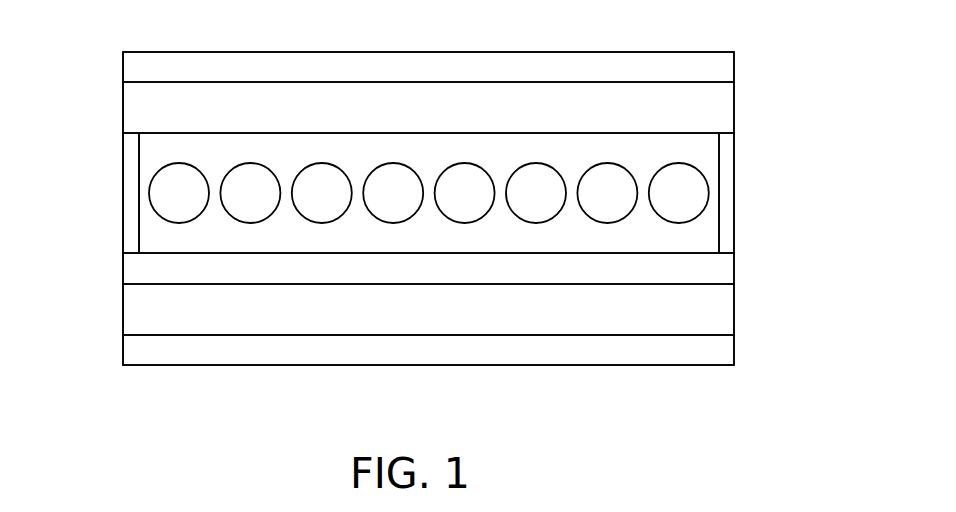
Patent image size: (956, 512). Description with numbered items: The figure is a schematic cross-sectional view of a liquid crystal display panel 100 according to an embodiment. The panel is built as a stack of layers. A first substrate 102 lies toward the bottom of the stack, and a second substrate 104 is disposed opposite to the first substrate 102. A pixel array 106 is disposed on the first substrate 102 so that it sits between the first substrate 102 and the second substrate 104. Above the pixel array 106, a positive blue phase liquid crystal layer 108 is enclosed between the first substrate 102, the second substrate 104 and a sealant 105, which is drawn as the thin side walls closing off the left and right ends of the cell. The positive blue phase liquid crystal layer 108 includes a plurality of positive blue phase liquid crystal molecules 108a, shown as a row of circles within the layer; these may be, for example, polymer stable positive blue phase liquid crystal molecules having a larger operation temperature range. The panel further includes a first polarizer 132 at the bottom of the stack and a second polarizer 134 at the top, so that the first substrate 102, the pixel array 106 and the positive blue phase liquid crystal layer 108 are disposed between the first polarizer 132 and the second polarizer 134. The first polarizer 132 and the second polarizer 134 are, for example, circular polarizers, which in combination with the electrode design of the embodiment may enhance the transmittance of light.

The liquid crystal display panel 100 is at (742, 443).
The first substrate 102 is at (717, 305).
The second substrate 104 is at (714, 112).
The sealant 105 is at (128, 145).
The pixel array 106 is at (717, 270).
The positive blue phase liquid crystal layer 108 is at (745, 133).
The positive blue phase liquid crystal molecules 108a is at (166, 199).
The first polarizer 132 is at (717, 352).
The second polarizer 134 is at (717, 70).